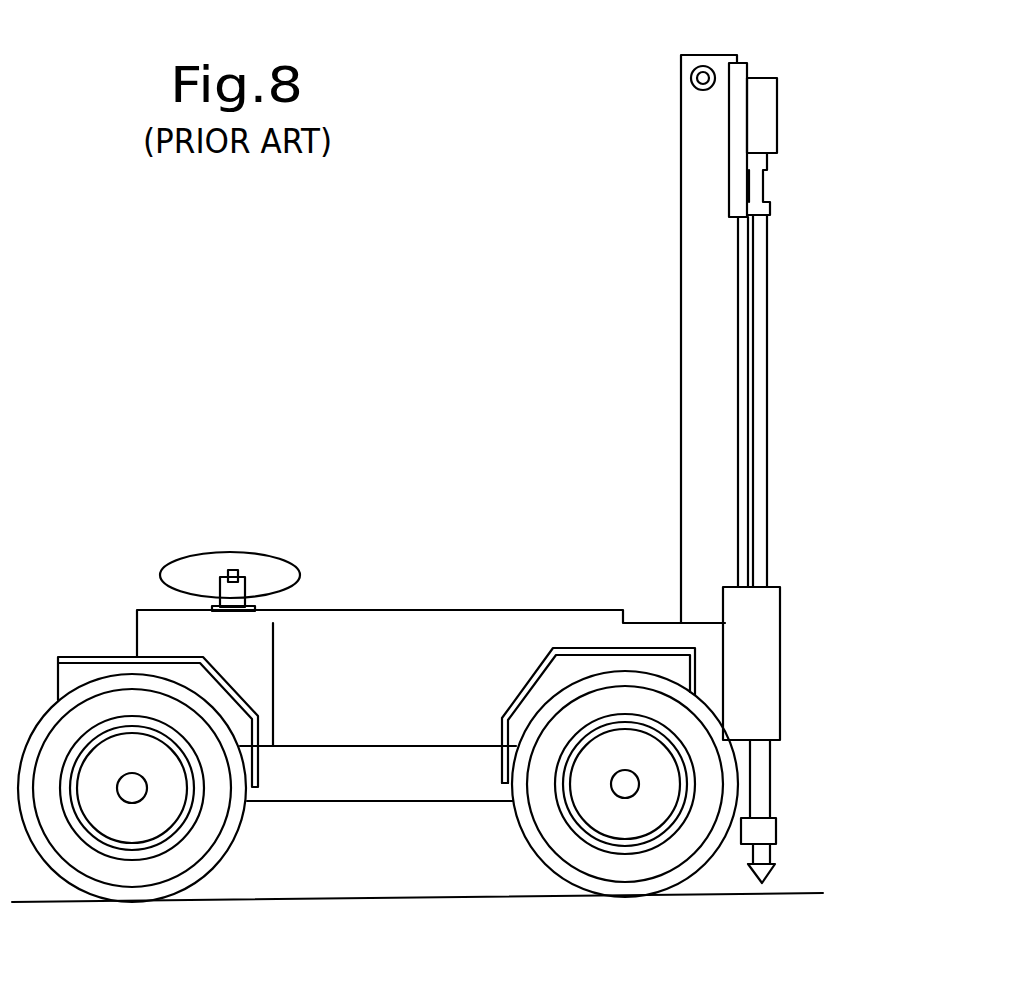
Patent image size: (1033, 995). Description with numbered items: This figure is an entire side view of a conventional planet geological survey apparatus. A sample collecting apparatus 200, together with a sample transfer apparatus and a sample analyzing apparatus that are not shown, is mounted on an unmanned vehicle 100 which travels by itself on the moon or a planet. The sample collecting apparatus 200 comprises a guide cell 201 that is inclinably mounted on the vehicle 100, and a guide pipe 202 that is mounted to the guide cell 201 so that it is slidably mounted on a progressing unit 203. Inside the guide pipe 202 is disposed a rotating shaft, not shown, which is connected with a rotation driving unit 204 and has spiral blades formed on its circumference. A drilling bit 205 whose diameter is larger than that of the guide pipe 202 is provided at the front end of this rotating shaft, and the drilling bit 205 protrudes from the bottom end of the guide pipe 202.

The unmanned vehicle 100 is at (419, 586).
The sample collecting apparatus 200 is at (707, 469).
The guide cell 201 is at (693, 366).
The guide pipe 202 is at (757, 268).
The progressing unit 203 is at (737, 171).
The rotation driving unit 204 is at (763, 118).
The drilling bit 205 is at (773, 852).